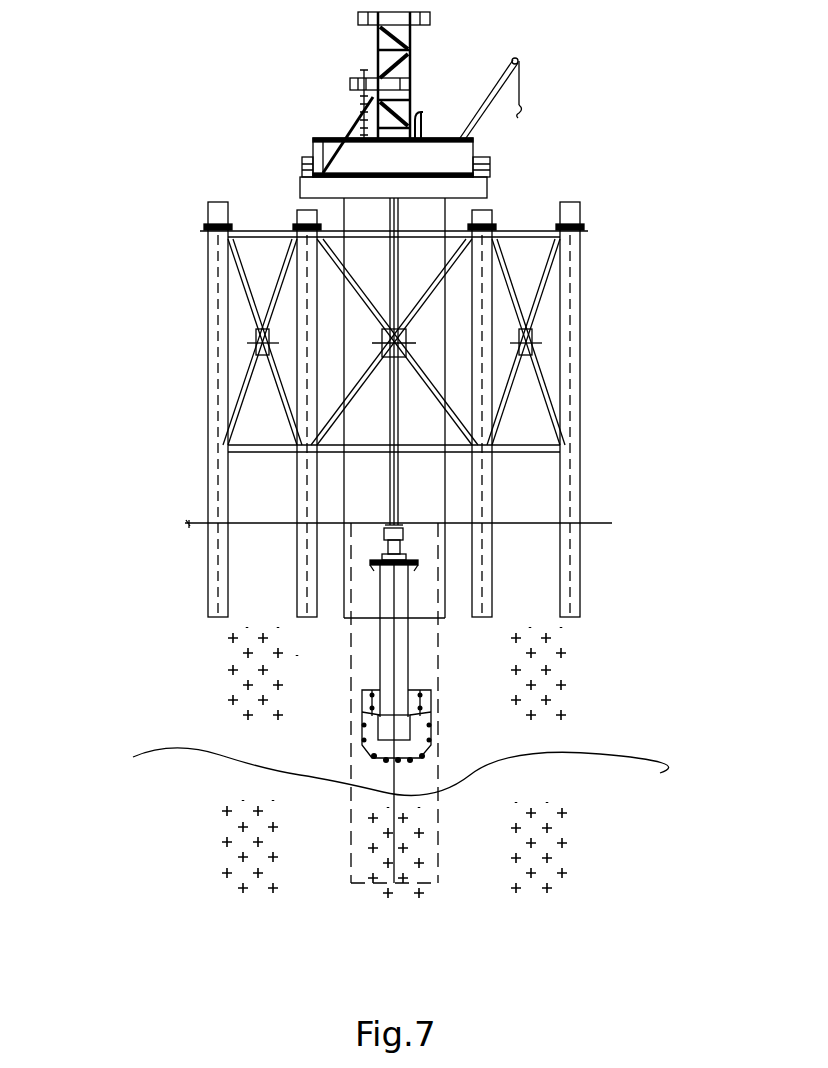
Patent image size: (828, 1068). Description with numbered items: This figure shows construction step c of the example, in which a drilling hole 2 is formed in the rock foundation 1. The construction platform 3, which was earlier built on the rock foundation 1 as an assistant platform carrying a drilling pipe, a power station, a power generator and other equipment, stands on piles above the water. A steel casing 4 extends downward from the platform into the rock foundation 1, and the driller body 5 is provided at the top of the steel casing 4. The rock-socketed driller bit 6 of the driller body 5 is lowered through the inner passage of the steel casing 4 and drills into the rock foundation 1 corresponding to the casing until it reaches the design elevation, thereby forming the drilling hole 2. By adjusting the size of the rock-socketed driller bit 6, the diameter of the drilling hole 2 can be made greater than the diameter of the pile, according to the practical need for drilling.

The rock foundation 1 is at (275, 693).
The drilling hole 2 is at (363, 772).
The construction platform 3 is at (576, 393).
The steel casing 4 is at (360, 337).
The driller body 5 is at (425, 148).
The rock-socketed driller bit 6 is at (408, 730).